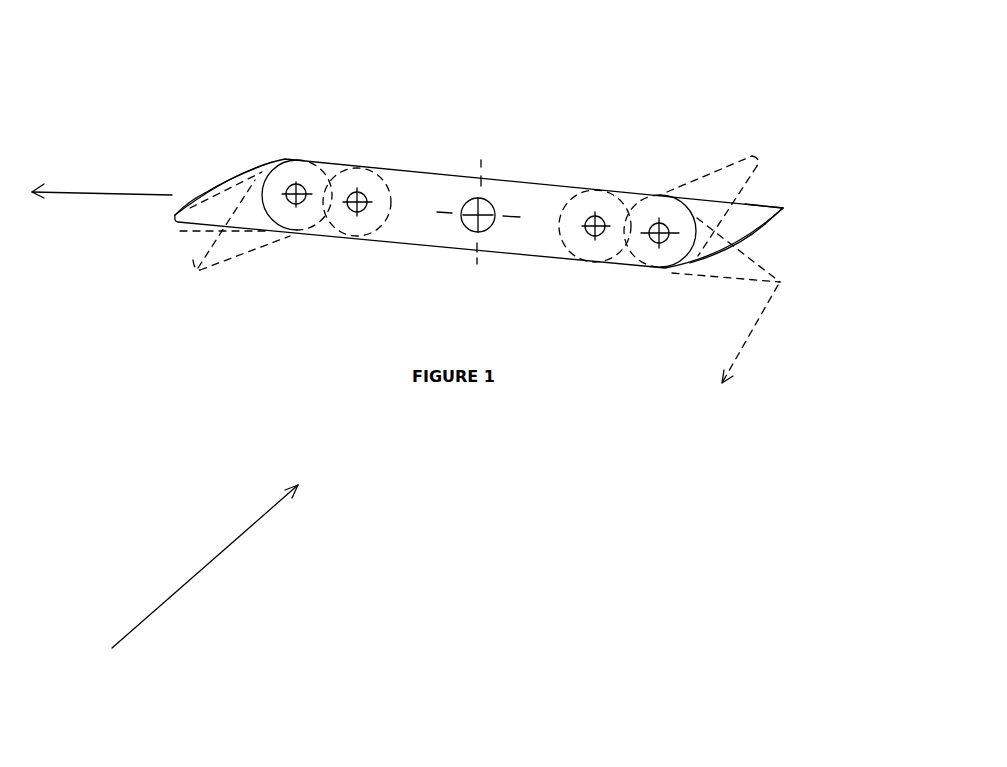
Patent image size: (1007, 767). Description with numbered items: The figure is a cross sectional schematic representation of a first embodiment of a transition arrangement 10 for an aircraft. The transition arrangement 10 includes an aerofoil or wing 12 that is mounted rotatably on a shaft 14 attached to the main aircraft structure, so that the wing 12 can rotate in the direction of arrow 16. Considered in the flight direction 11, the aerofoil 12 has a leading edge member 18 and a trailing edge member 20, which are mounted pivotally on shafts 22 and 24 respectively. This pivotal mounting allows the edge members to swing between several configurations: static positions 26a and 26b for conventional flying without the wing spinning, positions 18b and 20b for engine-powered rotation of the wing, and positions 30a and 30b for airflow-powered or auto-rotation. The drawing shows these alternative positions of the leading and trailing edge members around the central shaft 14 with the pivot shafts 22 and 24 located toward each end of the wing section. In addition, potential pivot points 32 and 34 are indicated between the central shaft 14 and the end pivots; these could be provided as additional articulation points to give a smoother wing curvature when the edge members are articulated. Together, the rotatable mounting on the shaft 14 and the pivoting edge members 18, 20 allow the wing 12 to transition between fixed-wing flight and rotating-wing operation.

The transition arrangement 10 is at (112, 667).
The flight direction 11 is at (110, 163).
The aerofoil or wing 12 is at (520, 183).
The shaft 14 is at (490, 227).
The arrow 16 is at (759, 334).
The leading edge member 18 is at (203, 190).
The leading edge member position for engine-powered wing rotation 18b is at (240, 172).
The trailing edge member 20 is at (773, 208).
The trailing edge member position for engine-powered wing rotation 20b is at (763, 228).
The shaft 22 is at (303, 187).
The shaft 24 is at (667, 195).
The static position 26a is at (183, 235).
The static position 26b is at (717, 283).
The auto-rotation position 30a is at (230, 260).
The auto-rotation position 30b is at (748, 160).
The potential pivot point 32 is at (357, 192).
The potential pivot point 34 is at (600, 235).